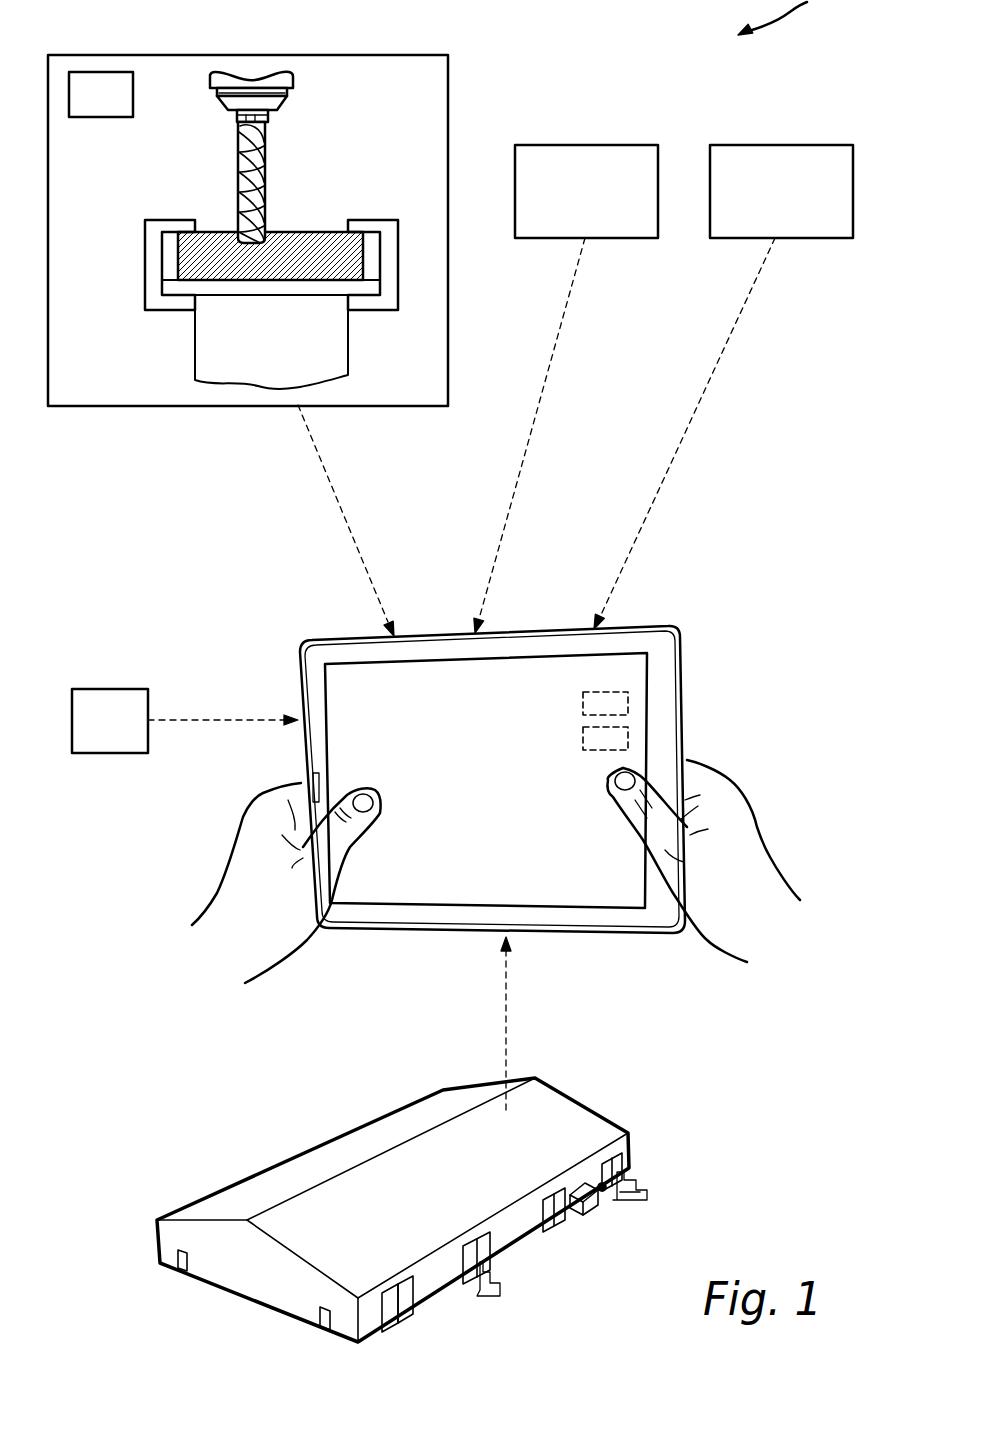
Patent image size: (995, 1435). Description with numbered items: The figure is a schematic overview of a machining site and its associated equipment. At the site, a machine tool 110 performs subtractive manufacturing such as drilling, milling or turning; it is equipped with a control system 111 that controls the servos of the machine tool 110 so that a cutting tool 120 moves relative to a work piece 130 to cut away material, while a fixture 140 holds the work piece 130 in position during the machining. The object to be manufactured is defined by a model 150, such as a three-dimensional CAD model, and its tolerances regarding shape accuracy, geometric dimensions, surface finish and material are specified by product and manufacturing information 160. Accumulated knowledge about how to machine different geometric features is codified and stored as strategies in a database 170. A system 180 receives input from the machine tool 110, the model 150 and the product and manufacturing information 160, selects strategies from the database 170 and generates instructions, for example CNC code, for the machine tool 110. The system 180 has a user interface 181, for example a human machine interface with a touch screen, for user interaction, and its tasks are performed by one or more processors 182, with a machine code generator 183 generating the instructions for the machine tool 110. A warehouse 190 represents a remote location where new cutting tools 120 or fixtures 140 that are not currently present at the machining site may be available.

The machine tool 110 is at (117, 405).
The control system 111 is at (99, 78).
The cutting tool 120 is at (267, 142).
The work piece 130 is at (315, 235).
The fixture 140 is at (387, 223).
The model 150 is at (582, 148).
The product and manufacturing information 160 is at (777, 148).
The database 170 is at (103, 688).
The system 180 is at (634, 626).
The user interface 181 is at (507, 655).
The processor 182 is at (623, 703).
The machine code generator 183 is at (623, 740).
The warehouse 190 is at (247, 1187).